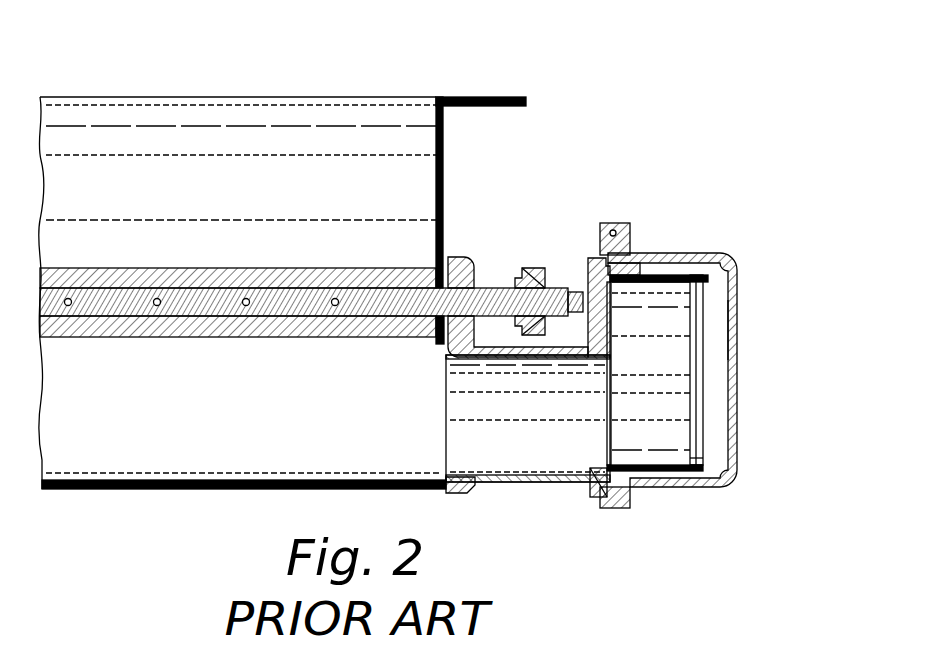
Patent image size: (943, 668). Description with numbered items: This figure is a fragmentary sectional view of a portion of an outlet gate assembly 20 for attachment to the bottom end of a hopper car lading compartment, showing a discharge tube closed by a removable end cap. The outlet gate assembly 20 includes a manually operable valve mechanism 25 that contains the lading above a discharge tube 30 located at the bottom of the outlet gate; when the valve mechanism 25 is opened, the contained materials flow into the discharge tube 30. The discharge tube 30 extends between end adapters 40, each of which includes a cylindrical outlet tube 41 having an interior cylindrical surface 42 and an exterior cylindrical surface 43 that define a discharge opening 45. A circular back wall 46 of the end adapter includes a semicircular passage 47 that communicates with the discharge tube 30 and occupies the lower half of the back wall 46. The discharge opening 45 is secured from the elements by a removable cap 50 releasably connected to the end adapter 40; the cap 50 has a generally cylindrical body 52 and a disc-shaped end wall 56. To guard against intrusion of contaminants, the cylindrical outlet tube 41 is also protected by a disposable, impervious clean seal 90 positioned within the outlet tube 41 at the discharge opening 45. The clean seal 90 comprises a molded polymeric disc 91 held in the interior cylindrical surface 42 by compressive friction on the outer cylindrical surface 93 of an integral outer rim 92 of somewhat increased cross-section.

The outlet gate assembly 20 is at (479, 80).
The valve mechanism 25 is at (224, 269).
The discharge tube 30 is at (120, 490).
The end adapter 40 is at (448, 500).
The cylindrical outlet tube 41 is at (656, 484).
The interior cylindrical surface 42 is at (677, 470).
The exterior cylindrical surface 43 is at (680, 472).
The discharge opening 45 is at (714, 316).
The circular back wall 46 is at (656, 275).
The semicircular passage 47 is at (618, 391).
The removable cap 50 is at (682, 228).
The cylindrical body 52 is at (701, 273).
The disc-shaped end wall 56 is at (740, 328).
The clean seal 90 is at (707, 297).
The molded polymeric disc 91 is at (698, 458).
The integral outer rim 92 is at (703, 276).
The outer cylindrical surface 93 is at (695, 472).